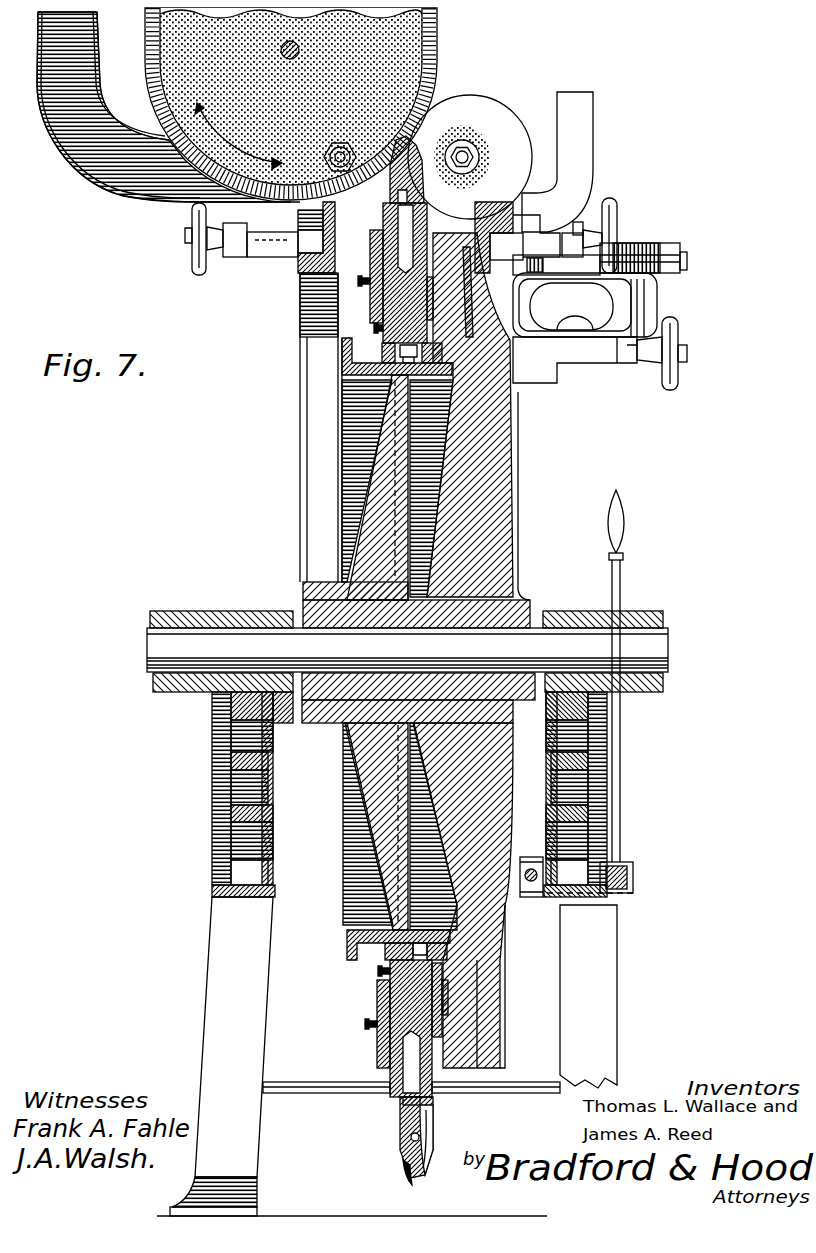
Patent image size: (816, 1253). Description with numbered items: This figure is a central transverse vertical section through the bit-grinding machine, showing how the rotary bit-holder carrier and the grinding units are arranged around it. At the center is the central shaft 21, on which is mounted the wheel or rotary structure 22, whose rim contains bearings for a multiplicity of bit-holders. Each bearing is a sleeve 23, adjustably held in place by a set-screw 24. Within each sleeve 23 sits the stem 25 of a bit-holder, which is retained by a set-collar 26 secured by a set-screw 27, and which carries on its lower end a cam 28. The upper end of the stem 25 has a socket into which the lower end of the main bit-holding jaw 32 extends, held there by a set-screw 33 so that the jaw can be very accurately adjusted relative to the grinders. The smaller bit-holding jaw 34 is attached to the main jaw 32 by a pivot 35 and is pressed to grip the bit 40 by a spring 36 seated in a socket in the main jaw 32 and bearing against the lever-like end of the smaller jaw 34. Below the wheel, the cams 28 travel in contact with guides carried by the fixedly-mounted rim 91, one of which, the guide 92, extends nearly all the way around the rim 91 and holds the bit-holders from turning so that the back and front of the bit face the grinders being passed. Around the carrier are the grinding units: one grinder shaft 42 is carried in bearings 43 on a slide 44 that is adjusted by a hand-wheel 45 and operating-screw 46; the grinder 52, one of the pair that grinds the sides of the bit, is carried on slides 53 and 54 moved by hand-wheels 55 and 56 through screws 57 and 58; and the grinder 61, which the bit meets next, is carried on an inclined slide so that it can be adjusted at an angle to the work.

The central shaft 21 is at (150, 650).
The wheel or rotary structure 22 is at (500, 463).
The sleeve 23 is at (370, 296).
The set-screw 24 is at (358, 281).
The stem 25 is at (395, 310).
The set-collar 26 is at (433, 970).
The set-screw 27 is at (378, 330).
The cam 28 is at (342, 378).
The main bit-holding jaw 32 is at (402, 1120).
The set-screw 33 is at (380, 1093).
The smaller bit-holding jaw 34 is at (433, 1130).
The pivot 35 is at (412, 1140).
The spring 36 is at (433, 1102).
The bit 40 is at (408, 1175).
The shaft 42 is at (688, 262).
The bearings 43 is at (650, 245).
The slide 44 is at (623, 355).
The hand-wheel 45 is at (680, 372).
The operating-screw 46 is at (688, 352).
The grinder 52 is at (466, 142).
The slide 53 is at (278, 228).
The slide 54 is at (537, 228).
The hand-wheel 55 is at (192, 258).
The hand-wheel 56 is at (612, 205).
The screw 57 is at (240, 232).
The screw 58 is at (575, 236).
The grinder 61 is at (415, 46).
The fixedly-mounted rim 91 is at (350, 457).
The guide 92 is at (453, 357).